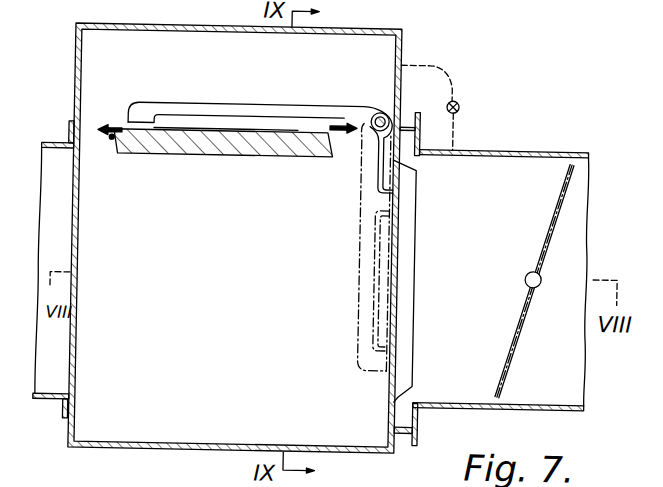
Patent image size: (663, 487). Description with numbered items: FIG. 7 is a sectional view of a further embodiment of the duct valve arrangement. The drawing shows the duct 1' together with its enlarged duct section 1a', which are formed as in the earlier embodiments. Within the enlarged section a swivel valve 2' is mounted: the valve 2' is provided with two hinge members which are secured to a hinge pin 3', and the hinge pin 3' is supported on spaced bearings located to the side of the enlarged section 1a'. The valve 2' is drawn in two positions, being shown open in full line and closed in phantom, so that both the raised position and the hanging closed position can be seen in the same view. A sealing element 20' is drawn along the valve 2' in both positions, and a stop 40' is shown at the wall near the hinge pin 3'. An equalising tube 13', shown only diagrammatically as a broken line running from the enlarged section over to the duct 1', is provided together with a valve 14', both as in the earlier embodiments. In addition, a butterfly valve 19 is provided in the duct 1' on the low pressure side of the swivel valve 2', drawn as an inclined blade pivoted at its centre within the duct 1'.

The duct 1' is at (500, 298).
The duct section 1a' is at (411, 445).
The valve 2' is at (284, 246).
The sealing lip 20' is at (259, 218).
The hinge pin 3' is at (373, 91).
The bracket stop 40' is at (422, 118).
The equalising tube 13' is at (456, 73).
The valve 14' is at (486, 123).
The butterfly valve 19 is at (524, 322).